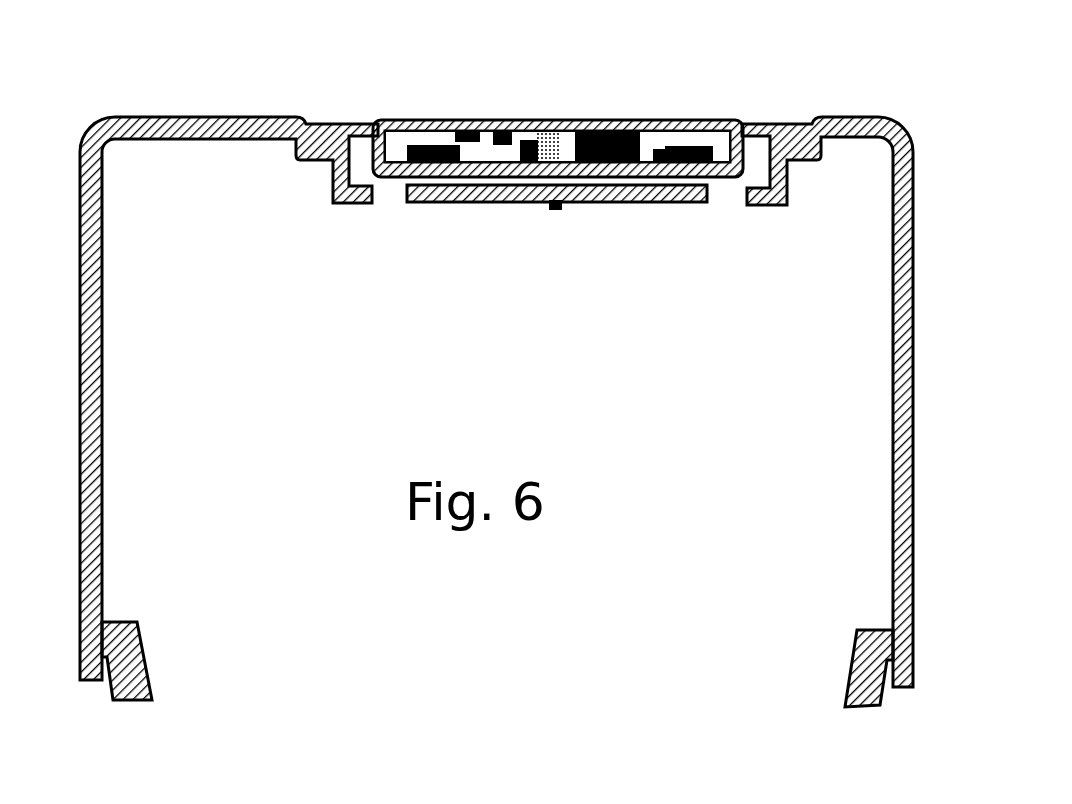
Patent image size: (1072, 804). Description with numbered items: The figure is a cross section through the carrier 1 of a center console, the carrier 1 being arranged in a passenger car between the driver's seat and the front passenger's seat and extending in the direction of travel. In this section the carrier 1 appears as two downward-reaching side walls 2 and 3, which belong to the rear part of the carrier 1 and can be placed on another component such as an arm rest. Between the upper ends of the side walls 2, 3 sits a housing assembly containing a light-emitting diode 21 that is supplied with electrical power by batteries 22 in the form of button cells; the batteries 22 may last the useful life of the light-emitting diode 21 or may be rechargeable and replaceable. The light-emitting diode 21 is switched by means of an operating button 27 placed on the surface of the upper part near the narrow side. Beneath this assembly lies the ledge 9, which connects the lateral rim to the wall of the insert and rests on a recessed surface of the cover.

The carrier 1 is at (560, 412).
The side wall 2 is at (104, 430).
The side wall 3 is at (891, 423).
The ledge 9 is at (612, 202).
The light-emitting diode 21 is at (604, 128).
The batteries 22 is at (428, 150).
The operating button 27 is at (486, 140).